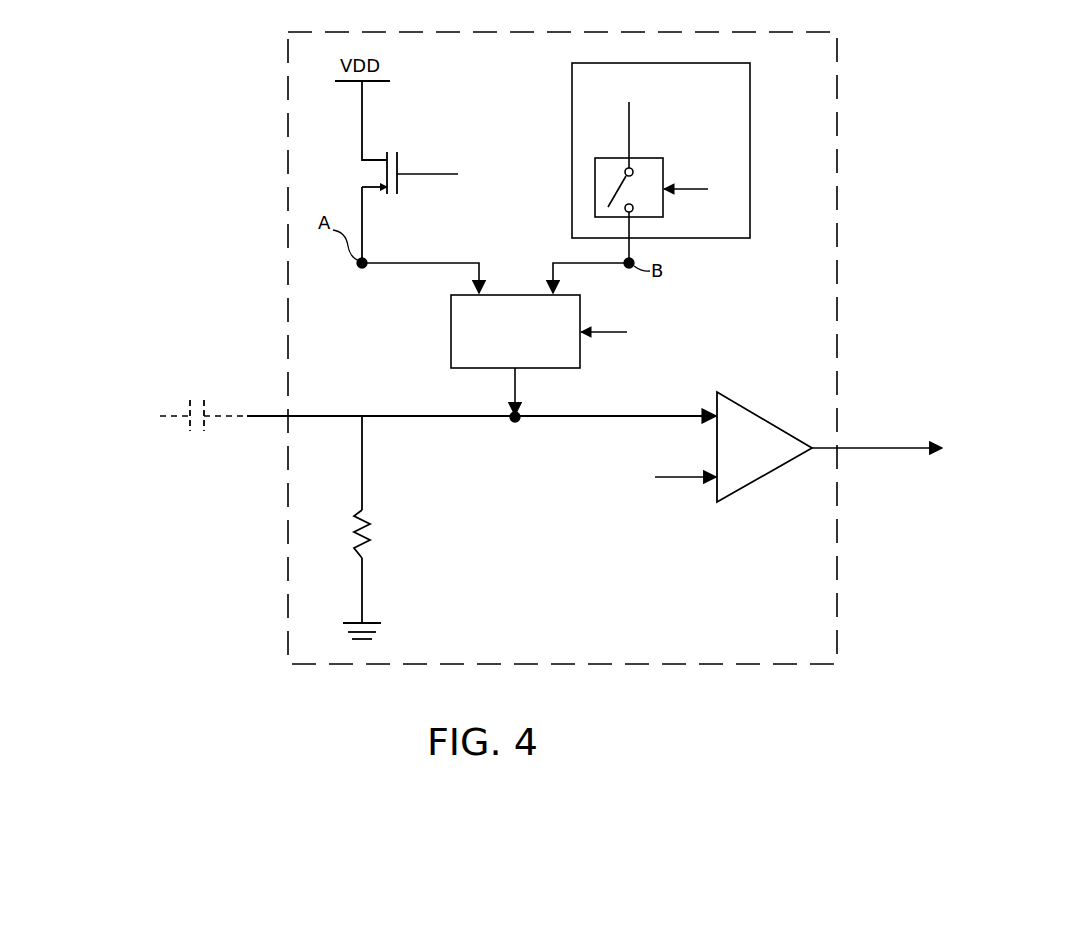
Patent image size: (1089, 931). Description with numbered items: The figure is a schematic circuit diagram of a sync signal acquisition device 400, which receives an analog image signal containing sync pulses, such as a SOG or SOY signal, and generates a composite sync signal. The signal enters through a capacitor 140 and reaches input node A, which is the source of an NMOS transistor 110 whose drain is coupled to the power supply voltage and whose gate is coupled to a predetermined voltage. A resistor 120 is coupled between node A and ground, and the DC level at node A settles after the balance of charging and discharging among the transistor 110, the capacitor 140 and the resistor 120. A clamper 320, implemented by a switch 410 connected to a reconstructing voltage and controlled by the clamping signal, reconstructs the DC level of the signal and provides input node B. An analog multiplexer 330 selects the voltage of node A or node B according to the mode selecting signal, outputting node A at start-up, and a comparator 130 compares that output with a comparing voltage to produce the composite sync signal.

The NMOS transistor 110 is at (398, 167).
The resistor 120 is at (368, 548).
The comparator 130 is at (777, 432).
The capacitor 140 is at (206, 412).
The clamper 320 is at (666, 170).
The analog multiplexer 330 is at (580, 368).
The sync signal acquisition device 400 is at (837, 664).
The switch 410 is at (663, 158).